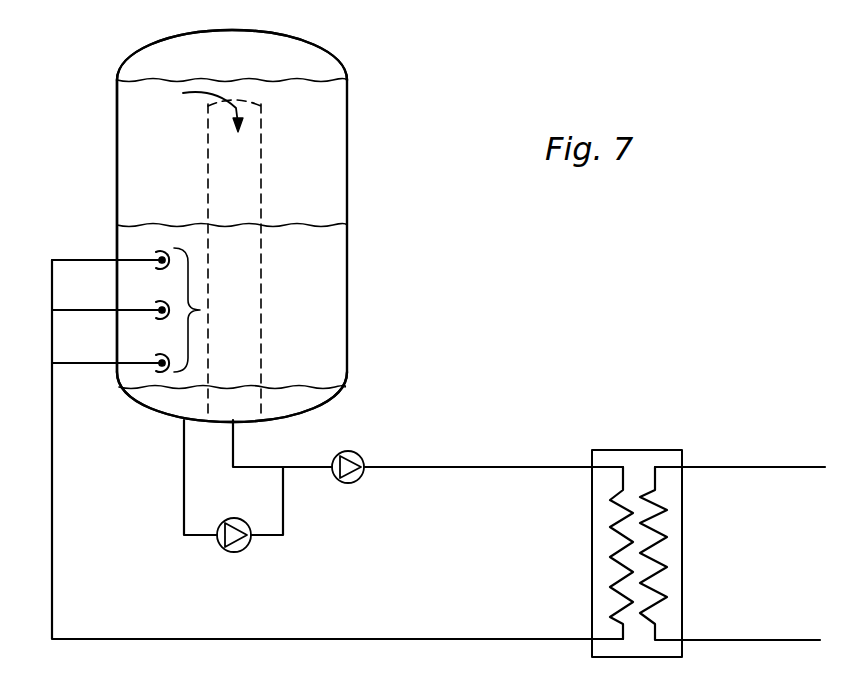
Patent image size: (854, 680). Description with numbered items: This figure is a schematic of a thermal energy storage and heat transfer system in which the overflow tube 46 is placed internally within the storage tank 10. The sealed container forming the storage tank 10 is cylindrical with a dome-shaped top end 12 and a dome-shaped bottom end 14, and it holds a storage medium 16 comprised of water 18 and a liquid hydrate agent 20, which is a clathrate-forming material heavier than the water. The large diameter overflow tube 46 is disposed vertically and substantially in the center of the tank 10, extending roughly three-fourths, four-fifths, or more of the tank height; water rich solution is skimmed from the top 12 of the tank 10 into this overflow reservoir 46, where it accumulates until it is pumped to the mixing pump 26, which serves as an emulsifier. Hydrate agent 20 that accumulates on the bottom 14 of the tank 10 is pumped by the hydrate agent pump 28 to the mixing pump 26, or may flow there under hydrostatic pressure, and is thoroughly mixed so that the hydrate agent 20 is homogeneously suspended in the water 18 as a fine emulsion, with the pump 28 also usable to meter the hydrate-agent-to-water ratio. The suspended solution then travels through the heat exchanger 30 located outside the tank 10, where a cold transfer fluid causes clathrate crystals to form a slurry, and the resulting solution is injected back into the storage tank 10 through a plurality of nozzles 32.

The storage tank 10 is at (357, 213).
The dome-shaped top end 12 is at (183, 33).
The dome-shaped bottom end 14 is at (163, 411).
The storage medium 16 is at (348, 298).
The water 18 is at (117, 160).
The liquid hydrate agent 20 is at (305, 397).
The mixing pump 26 is at (352, 483).
The hydrate agent pump 28 is at (248, 550).
The heat exchanger 30 is at (658, 447).
The nozzles 32 is at (146, 310).
The overflow tube 46 is at (262, 182).